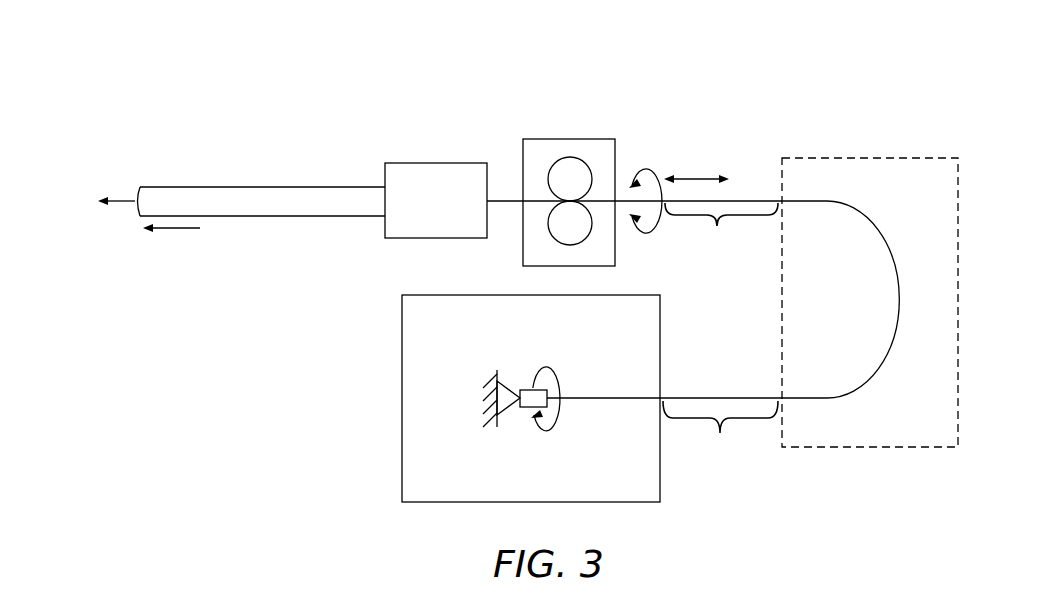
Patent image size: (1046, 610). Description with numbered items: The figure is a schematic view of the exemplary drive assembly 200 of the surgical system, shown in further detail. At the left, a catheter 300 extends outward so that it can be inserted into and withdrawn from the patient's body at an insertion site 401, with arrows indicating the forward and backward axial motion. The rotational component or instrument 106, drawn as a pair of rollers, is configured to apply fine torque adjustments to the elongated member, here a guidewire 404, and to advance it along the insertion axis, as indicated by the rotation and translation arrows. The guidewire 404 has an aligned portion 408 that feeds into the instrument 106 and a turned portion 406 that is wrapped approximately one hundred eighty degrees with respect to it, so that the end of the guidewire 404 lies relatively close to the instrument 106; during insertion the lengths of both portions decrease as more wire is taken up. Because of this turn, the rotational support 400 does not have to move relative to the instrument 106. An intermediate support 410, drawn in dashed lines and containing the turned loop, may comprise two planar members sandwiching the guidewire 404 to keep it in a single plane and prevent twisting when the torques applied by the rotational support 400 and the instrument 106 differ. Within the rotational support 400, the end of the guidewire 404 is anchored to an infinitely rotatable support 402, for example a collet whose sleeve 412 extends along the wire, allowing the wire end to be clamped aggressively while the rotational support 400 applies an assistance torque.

The drive assembly 200 is at (222, 412).
The catheter 300 is at (203, 198).
The insertion site 401 is at (121, 211).
The rotational component or instrument 106 is at (550, 146).
The aligned portion of the guidewire 408 is at (698, 218).
The intermediate support 410 is at (868, 157).
The guidewire 404 is at (803, 400).
The turned portion of the guidewire 406 is at (721, 432).
The rotational support 400 is at (430, 521).
The infinitely rotatable support 402 is at (492, 387).
The sleeve 412 is at (526, 389).